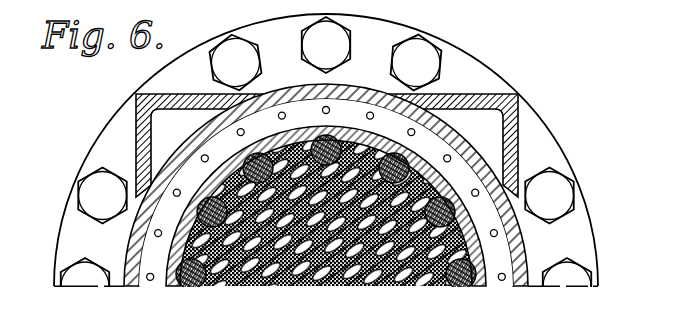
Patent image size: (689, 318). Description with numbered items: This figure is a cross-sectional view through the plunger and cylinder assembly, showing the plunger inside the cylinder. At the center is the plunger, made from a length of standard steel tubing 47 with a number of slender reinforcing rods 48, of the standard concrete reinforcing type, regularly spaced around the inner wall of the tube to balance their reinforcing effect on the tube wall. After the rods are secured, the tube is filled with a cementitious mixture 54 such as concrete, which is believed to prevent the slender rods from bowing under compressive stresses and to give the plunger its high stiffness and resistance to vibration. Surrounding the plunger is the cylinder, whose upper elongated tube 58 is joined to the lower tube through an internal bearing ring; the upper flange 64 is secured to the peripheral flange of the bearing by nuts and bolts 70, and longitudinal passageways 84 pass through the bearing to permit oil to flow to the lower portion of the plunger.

The steel tubing 47 is at (486, 253).
The reinforcing rods 48 is at (325, 162).
The cementitious mixture 54 is at (231, 190).
The upper elongated tube 58 is at (131, 245).
The upper flange 64 is at (525, 118).
The nuts and bolts 70 is at (326, 45).
The longitudinal passageways 84 is at (475, 192).